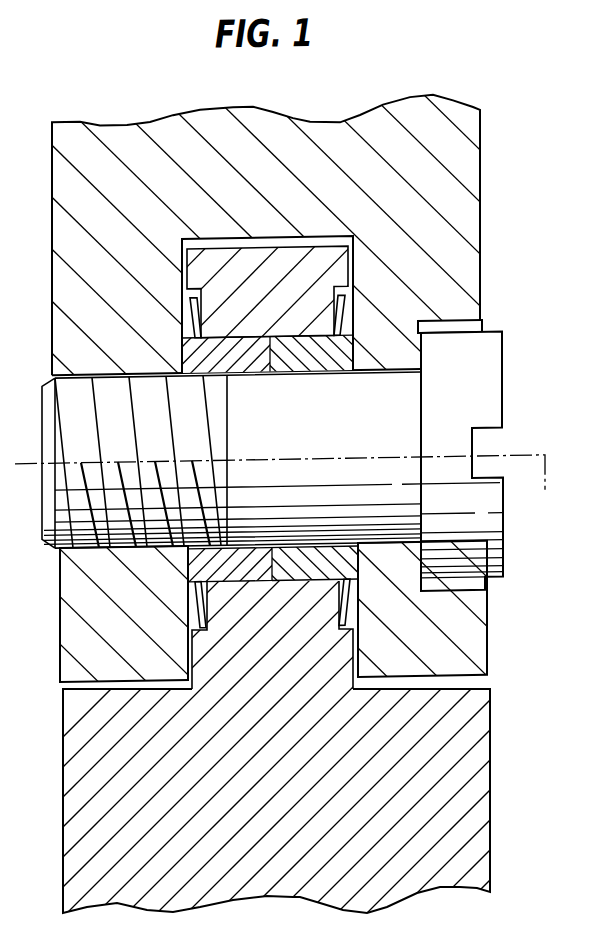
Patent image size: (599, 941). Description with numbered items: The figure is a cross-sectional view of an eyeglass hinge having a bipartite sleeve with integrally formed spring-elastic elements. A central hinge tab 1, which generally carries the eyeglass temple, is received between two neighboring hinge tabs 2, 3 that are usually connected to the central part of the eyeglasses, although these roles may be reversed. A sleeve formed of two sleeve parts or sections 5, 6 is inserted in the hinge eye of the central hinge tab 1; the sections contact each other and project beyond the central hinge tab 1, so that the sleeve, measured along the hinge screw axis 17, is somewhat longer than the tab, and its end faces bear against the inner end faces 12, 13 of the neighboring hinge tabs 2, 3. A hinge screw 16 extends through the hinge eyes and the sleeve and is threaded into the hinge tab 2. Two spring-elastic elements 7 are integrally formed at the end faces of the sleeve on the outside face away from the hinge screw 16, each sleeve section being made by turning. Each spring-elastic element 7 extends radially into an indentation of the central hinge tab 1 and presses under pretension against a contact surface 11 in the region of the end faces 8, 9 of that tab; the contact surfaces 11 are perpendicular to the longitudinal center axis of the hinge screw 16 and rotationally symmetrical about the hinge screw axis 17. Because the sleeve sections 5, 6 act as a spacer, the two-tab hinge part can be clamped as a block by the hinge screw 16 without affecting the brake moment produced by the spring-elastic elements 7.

The central hinge tab 1 is at (178, 235).
The neighboring hinge tab 2 is at (70, 661).
The neighboring hinge tab 3 is at (475, 655).
The sleeve part 5 is at (248, 568).
The sleeve part 6 is at (303, 568).
The spring-elastic element 7 is at (182, 310).
The end face of the central hinge tab 8 is at (182, 275).
The end face of the central hinge tab 9 is at (355, 268).
The contact surface 11 is at (335, 302).
The inner end face of the neighboring hinge tab 12 is at (180, 241).
The inner end face of the neighboring hinge tab 13 is at (355, 241).
The hinge screw 16 is at (497, 541).
The hinge screw axis 17 is at (545, 494).